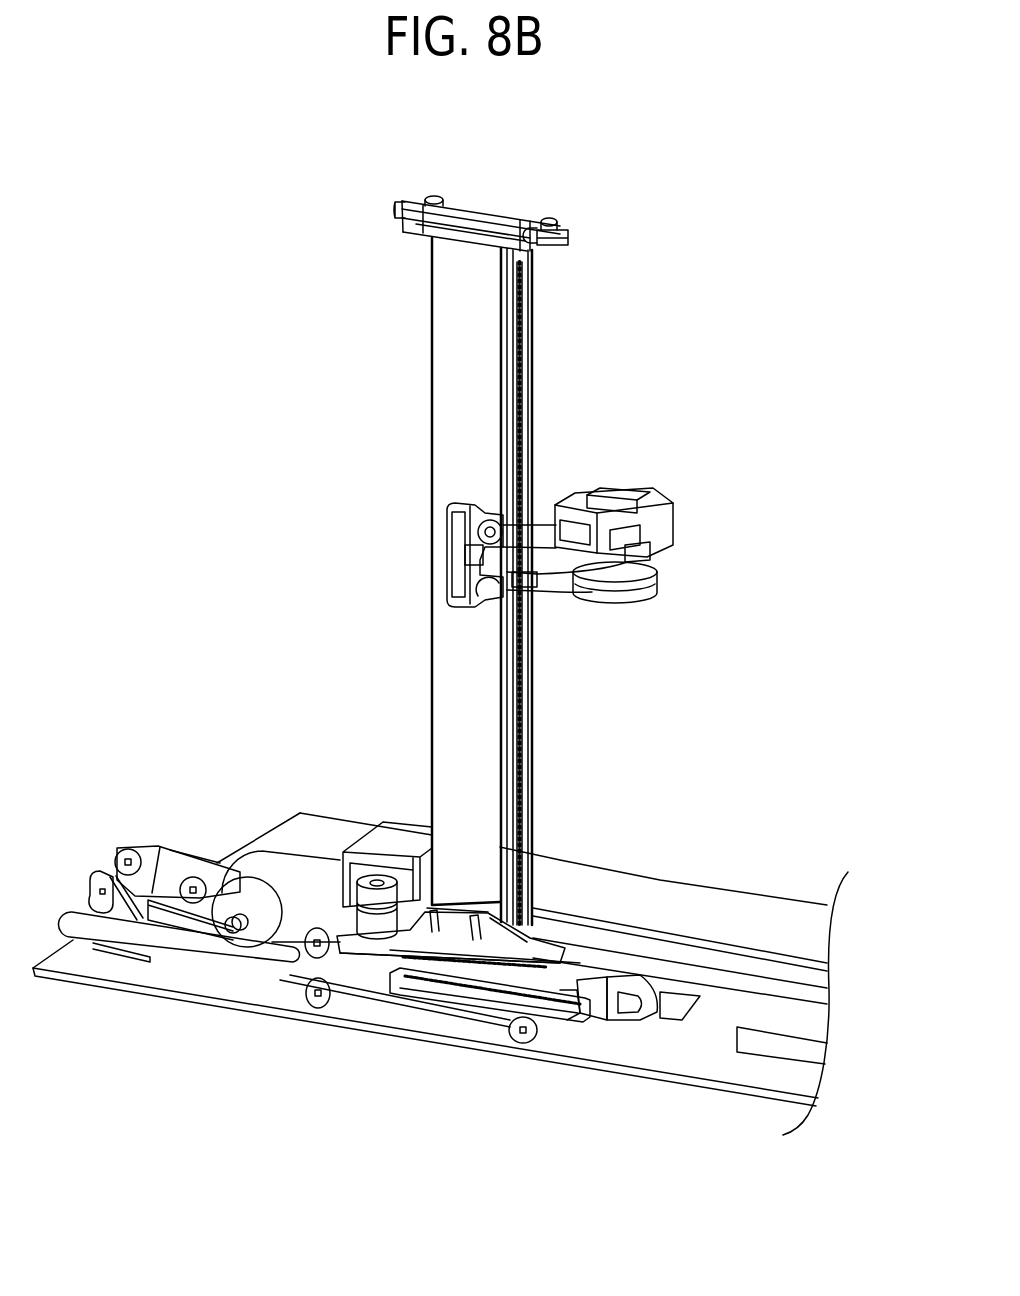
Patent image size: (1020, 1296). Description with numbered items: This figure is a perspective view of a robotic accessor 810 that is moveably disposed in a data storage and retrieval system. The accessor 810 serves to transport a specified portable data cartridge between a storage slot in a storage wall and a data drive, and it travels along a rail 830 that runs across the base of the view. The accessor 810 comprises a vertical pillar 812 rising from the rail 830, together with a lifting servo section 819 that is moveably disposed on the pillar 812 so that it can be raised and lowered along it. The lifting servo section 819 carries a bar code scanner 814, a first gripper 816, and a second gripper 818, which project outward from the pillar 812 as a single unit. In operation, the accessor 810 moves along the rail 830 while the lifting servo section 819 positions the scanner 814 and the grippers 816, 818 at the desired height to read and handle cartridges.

The robotic accessor 810 is at (298, 532).
The vertical pillar 812 is at (447, 681).
The bar code scanner 814 is at (616, 482).
The first gripper 816 is at (655, 490).
The second gripper 818 is at (650, 582).
The lifting servo section 819 is at (548, 590).
The rail 830 is at (812, 1050).